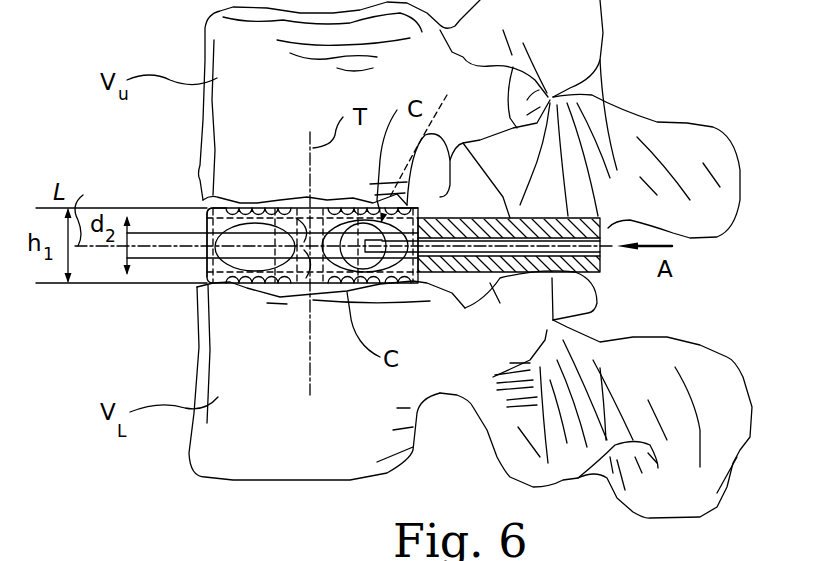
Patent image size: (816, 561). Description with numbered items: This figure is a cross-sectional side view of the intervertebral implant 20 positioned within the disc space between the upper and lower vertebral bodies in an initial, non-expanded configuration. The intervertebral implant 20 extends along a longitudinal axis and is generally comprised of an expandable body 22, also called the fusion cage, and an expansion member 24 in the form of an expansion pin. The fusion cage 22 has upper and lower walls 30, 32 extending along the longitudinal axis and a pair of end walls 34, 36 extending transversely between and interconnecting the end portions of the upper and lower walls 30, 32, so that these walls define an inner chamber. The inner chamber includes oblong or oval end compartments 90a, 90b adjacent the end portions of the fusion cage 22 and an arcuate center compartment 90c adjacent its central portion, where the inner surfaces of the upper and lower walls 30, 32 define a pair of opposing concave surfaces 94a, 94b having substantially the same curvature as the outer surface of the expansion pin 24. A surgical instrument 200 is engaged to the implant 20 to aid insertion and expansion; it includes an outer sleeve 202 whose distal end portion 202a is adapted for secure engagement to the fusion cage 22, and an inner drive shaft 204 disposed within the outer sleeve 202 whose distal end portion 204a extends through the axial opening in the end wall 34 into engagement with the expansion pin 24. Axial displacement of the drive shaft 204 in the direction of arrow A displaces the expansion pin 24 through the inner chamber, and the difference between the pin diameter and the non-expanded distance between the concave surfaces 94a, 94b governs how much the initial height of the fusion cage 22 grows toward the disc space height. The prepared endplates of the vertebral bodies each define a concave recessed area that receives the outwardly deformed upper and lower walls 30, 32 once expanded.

The intervertebral implant 20 is at (277, 185).
The expandable body 22 is at (182, 255).
The expansion member 24 is at (391, 290).
The upper wall 30 is at (305, 203).
The lower wall 32 is at (238, 290).
The end wall 34 is at (415, 210).
The end wall 36 is at (182, 284).
The end compartment 90a is at (427, 133).
The end compartment 90b is at (213, 205).
The center compartment 90c is at (289, 284).
The concave surface 94a is at (311, 222).
The concave surface 94b is at (304, 272).
The surgical instrument 200 is at (556, 190).
The outer sleeve 202 is at (606, 226).
The distal end portion 202a is at (443, 285).
The inner drive shaft 204 is at (610, 213).
The distal end portion 204a is at (610, 178).